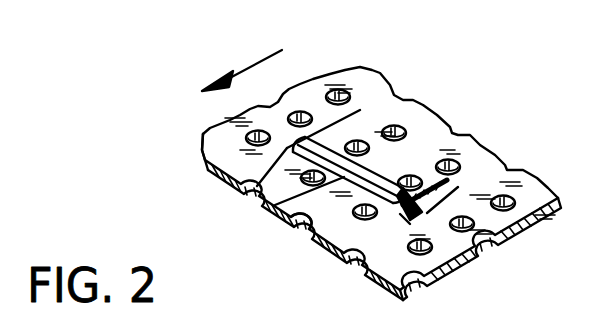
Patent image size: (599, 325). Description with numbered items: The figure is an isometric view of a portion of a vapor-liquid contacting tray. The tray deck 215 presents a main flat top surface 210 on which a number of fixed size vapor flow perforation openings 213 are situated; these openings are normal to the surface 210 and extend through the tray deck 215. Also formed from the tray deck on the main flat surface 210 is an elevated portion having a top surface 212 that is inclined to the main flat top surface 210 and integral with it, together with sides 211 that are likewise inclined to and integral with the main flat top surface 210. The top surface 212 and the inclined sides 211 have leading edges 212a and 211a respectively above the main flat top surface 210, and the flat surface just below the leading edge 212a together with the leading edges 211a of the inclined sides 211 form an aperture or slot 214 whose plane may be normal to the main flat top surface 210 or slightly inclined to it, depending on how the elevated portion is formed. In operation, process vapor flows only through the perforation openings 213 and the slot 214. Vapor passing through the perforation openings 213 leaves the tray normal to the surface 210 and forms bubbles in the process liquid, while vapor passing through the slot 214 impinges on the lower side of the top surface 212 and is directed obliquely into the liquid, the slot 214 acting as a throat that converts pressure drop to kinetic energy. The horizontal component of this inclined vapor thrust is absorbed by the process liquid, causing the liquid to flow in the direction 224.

The main flat top surface 210 is at (223, 134).
The inclined sides 211 is at (410, 224).
The leading edges of the inclined sides 211a is at (327, 238).
The top surface of elevated portion 212 is at (351, 129).
The leading edge of the top surface 212a is at (276, 205).
The vapor flow perforation openings 213 is at (303, 116).
The slot 214 is at (255, 185).
The tray deck 215 is at (192, 156).
The direction of liquid flow 224 is at (264, 63).